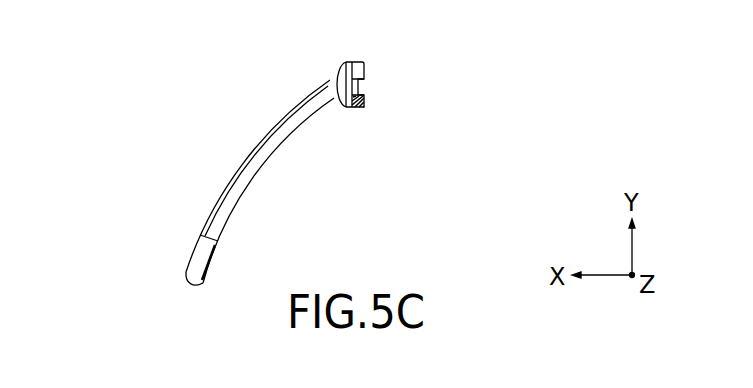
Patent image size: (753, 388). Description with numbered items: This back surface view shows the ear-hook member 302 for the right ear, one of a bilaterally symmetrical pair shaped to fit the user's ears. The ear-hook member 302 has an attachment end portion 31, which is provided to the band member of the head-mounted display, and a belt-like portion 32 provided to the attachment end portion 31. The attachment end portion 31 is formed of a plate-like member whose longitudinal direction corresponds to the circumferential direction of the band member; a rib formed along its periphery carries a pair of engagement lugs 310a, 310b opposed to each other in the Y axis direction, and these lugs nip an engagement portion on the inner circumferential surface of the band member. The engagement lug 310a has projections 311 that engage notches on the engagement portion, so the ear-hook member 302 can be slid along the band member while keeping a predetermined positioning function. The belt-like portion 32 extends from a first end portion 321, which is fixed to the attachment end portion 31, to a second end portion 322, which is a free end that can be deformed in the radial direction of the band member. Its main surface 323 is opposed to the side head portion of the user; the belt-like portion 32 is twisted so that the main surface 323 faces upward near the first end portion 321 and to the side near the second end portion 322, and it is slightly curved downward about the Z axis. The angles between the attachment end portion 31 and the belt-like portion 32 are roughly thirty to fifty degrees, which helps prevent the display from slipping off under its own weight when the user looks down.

The ear-hook member 302 is at (99, 89).
The belt-like portion 32 is at (244, 193).
The main surface 323 is at (265, 135).
The second end portion 322 is at (189, 262).
The attachment end portion 31 is at (343, 62).
The first end portion 321 is at (327, 80).
The engagement lug 310a is at (363, 61).
The projection 311 is at (358, 83).
The engagement lug 310b is at (355, 110).